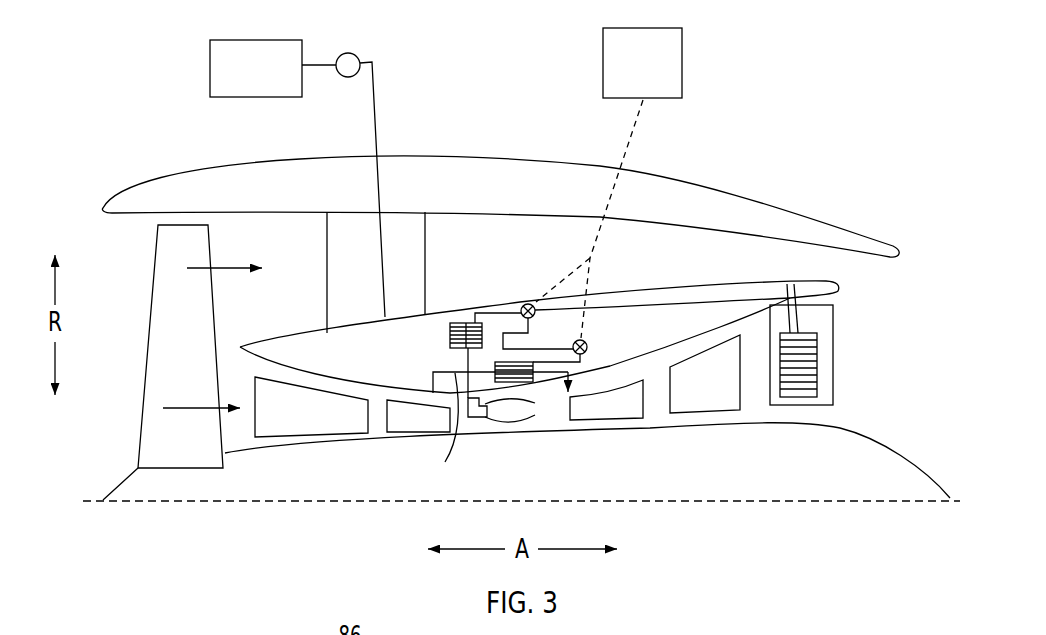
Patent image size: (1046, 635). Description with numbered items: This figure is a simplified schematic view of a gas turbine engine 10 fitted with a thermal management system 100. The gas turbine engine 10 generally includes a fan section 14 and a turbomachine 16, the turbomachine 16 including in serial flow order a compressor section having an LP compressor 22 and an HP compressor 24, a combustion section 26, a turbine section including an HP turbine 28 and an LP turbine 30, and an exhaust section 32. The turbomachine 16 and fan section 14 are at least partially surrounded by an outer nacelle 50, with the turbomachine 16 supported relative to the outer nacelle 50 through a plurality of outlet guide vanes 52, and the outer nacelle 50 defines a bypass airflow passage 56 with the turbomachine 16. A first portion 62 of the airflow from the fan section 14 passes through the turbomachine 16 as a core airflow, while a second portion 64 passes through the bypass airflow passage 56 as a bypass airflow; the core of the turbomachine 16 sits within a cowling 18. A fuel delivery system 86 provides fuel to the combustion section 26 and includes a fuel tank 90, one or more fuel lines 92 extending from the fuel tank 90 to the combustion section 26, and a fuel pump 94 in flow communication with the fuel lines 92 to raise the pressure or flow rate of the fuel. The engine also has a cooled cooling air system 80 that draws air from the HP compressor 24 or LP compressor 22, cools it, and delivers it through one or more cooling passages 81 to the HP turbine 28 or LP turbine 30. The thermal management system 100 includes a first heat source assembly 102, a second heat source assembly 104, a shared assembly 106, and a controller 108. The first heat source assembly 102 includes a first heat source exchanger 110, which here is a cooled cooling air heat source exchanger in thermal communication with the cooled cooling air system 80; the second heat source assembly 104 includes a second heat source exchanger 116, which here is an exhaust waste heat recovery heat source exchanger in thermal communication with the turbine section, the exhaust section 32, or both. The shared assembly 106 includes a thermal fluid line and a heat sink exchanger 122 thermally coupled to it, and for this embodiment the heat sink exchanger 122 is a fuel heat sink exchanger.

The gas turbine engine 10 is at (150, 138).
The fan section 14 is at (140, 300).
The turbomachine 16 is at (300, 313).
The cowling 18 is at (628, 290).
The LP compressor 22 is at (292, 424).
The HP compressor 24 is at (418, 422).
The combustion section 26 is at (513, 432).
The HP turbine 28 is at (615, 408).
The LP turbine 30 is at (683, 397).
The exhaust section 32 is at (827, 340).
The outer nacelle 50 is at (473, 170).
The outlet guide vanes 52 is at (427, 270).
The bypass airflow passage 56 is at (531, 254).
The first portion of airflow 62 is at (208, 406).
The second portion of airflow 64 is at (230, 268).
The cooled cooling air system 80 is at (430, 385).
The cooling passages 81 is at (443, 429).
The fuel delivery system 86 is at (410, 90).
The fuel tank 90 is at (244, 79).
The fuel lines 92 is at (372, 128).
The fuel pump 94 is at (347, 53).
The thermal management system 100 is at (670, 256).
The first heat source assembly 102 is at (715, 283).
The second heat source assembly 104 is at (594, 358).
The shared assembly 106 is at (483, 300).
The controller 108 is at (625, 79).
The first heat source exchanger 110 is at (817, 366).
The second heat source exchanger 116 is at (538, 386).
The heat sink exchanger 122 is at (450, 333).